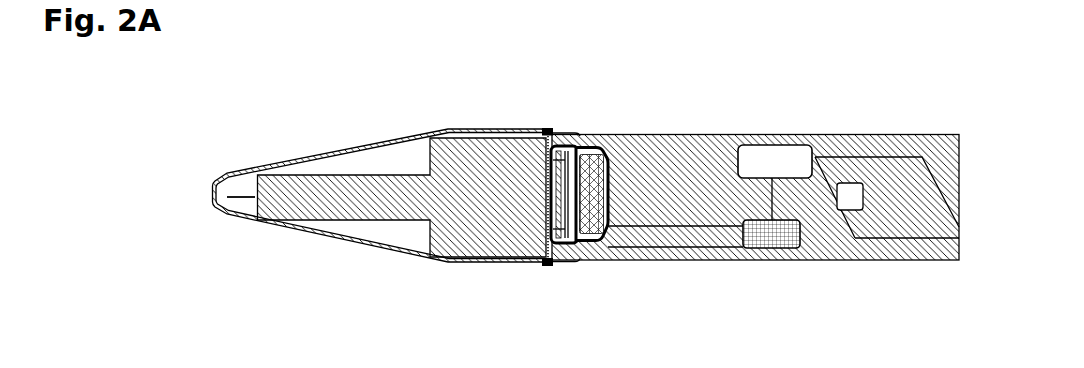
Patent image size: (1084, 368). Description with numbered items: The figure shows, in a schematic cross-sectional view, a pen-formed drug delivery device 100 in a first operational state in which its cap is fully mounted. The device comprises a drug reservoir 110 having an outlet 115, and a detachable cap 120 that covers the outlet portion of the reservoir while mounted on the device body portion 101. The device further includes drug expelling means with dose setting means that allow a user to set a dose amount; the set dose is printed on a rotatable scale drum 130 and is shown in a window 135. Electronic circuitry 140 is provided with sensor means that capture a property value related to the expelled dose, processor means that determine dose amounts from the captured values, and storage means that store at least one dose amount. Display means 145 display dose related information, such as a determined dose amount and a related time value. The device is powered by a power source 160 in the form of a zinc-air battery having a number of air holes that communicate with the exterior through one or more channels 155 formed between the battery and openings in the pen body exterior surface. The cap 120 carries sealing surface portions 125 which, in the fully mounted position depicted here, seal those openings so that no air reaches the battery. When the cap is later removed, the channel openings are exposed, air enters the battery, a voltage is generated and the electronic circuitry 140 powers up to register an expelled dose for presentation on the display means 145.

The drug delivery device 100 is at (162, 106).
The device body portion 101 is at (663, 135).
The drug reservoir 110 is at (357, 221).
The outlet 115 is at (249, 198).
The detachable cap 120 is at (315, 154).
The sealing surface portions 125 is at (549, 131).
The rotatable scale drum 130 is at (887, 157).
The window 135 is at (852, 209).
The electronic circuitry 140 is at (780, 248).
The display means 145 is at (780, 153).
The channels 155 is at (548, 245).
The power source 160 is at (592, 239).